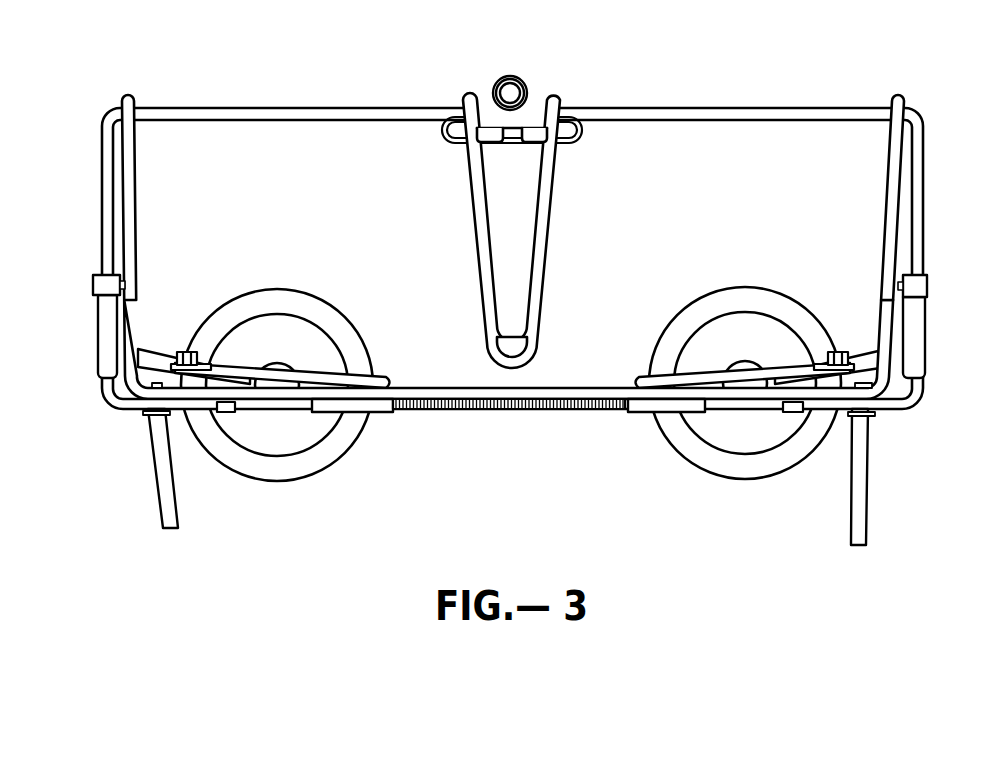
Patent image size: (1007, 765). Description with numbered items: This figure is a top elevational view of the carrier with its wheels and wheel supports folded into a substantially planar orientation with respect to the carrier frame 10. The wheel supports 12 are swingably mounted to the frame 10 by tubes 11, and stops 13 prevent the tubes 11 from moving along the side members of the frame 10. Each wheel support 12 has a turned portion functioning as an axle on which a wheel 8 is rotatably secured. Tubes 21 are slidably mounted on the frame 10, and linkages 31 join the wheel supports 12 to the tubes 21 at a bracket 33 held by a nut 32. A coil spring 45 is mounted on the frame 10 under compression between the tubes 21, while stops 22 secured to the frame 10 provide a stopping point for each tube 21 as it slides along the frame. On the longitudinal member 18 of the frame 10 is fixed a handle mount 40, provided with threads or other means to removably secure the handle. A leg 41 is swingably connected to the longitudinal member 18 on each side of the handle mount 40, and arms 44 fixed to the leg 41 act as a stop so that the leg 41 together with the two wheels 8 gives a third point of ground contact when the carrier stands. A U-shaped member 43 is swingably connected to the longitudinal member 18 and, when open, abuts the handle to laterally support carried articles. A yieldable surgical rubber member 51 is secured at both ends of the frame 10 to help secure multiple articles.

The wheels 8 is at (297, 468).
The carrier frame 10 is at (289, 107).
The tubes 11 is at (103, 358).
The wheel supports 12 is at (142, 352).
The stops 13 is at (93, 285).
The longitudinal member 18 is at (672, 107).
The tubes 21 is at (365, 412).
The stops 22 is at (226, 413).
The linkages 31 is at (355, 377).
The nut 32 is at (180, 362).
The bracket 33 is at (191, 353).
The handle mount 40 is at (522, 80).
The leg 41 is at (548, 242).
The U-shaped member 43 is at (134, 158).
The arms 44 is at (583, 133).
The coil spring 45 is at (511, 412).
The yieldable surgical rubber member 51 is at (166, 485).